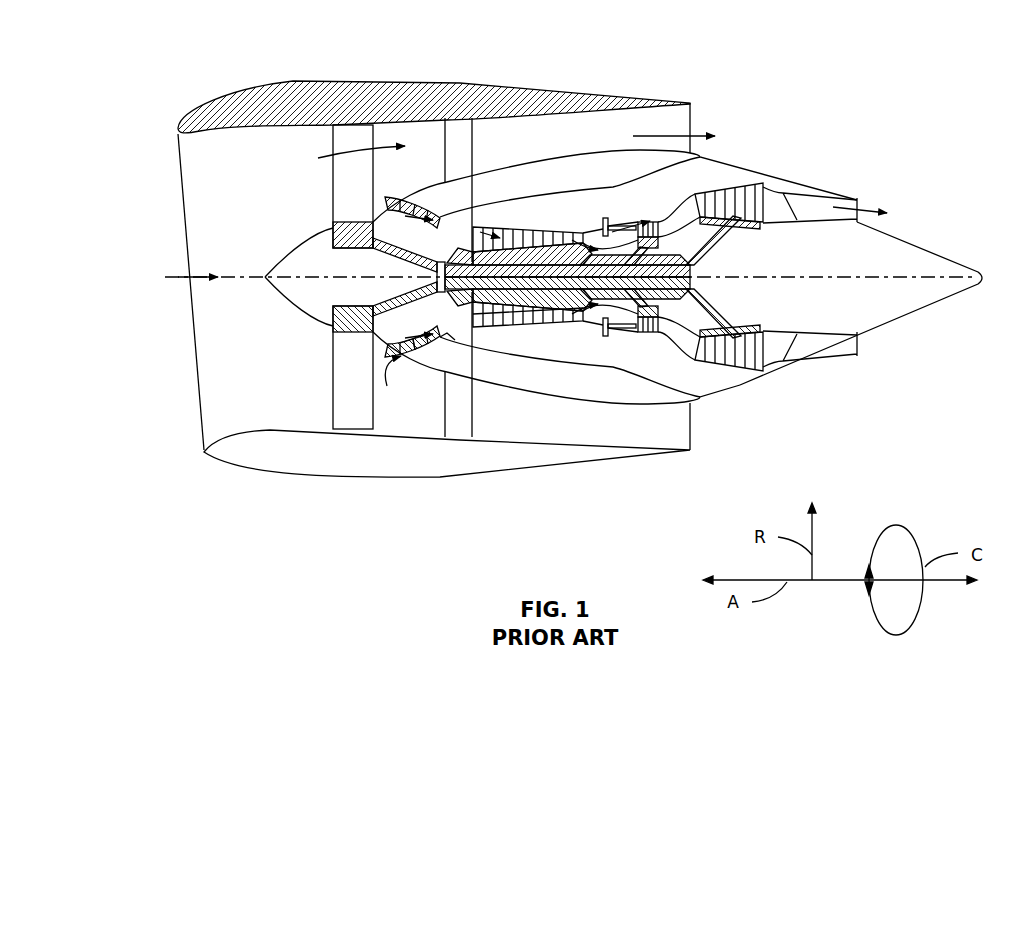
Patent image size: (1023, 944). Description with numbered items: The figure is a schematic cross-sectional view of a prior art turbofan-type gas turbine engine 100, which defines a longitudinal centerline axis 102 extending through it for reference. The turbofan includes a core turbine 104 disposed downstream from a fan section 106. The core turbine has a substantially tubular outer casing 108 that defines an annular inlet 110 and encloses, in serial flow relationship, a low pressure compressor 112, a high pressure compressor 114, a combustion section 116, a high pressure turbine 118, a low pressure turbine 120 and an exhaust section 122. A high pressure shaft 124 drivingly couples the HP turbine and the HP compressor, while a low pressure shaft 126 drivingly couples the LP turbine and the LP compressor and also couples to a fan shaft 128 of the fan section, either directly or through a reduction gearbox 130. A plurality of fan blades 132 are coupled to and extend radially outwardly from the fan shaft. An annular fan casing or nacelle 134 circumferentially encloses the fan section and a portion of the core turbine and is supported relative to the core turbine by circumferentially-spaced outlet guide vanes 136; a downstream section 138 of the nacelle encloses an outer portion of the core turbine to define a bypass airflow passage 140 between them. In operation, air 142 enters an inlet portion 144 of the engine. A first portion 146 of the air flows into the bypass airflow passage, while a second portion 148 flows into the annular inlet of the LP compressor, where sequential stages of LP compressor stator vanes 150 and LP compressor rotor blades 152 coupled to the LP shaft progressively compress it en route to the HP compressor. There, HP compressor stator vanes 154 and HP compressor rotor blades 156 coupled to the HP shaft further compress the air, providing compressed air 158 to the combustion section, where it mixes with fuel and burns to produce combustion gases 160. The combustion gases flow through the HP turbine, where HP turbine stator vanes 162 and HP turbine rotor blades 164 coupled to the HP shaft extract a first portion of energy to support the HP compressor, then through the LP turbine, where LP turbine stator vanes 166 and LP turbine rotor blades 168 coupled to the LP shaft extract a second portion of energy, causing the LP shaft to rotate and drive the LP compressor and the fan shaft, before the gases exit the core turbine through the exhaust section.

The turbofan gas turbine engine 100 is at (795, 82).
The longitudinal centerline axis 102 is at (808, 277).
The core turbine 104 is at (566, 188).
The fan section 106 is at (427, 289).
The outer casing 108 is at (580, 397).
The annular inlet 110 is at (388, 382).
The low pressure compressor 112 is at (447, 340).
The high pressure compressor 114 is at (500, 330).
The combustion section 116 is at (613, 332).
The high pressure turbine 118 is at (670, 322).
The low pressure turbine 120 is at (748, 379).
The exhaust section 122 is at (860, 203).
The high pressure shaft 124 is at (650, 255).
The low pressure shaft 126 is at (443, 263).
The fan shaft 128 is at (372, 249).
The reduction gearbox 130 is at (452, 333).
The fan blades 132 is at (333, 378).
The nacelle 134 is at (365, 478).
The outlet guide vanes 136 is at (474, 146).
The downstream section of the nacelle 138 is at (626, 88).
The bypass airflow passage 140 is at (580, 139).
The air 142 is at (202, 276).
The inlet portion 144 is at (203, 432).
The first portion of the air 146 is at (350, 156).
The second portion of the air 148 is at (388, 198).
The LP compressor stator vanes 150 is at (422, 355).
The LP compressor rotor blades 152 is at (423, 353).
The HP compressor stator vanes 154 is at (552, 322).
The HP compressor rotor blades 156 is at (568, 320).
The compressed air 158 is at (604, 232).
The combustion gases 160 is at (648, 223).
The HP turbine stator vanes 162 is at (647, 332).
The HP turbine rotor blades 164 is at (653, 315).
The LP turbine stator vanes 166 is at (700, 208).
The LP turbine rotor blades 168 is at (700, 194).